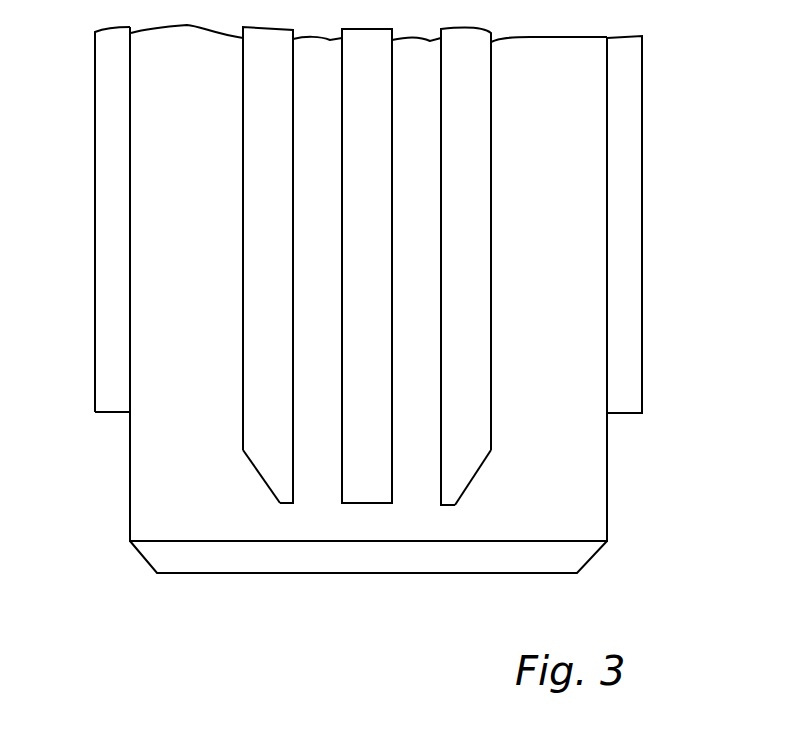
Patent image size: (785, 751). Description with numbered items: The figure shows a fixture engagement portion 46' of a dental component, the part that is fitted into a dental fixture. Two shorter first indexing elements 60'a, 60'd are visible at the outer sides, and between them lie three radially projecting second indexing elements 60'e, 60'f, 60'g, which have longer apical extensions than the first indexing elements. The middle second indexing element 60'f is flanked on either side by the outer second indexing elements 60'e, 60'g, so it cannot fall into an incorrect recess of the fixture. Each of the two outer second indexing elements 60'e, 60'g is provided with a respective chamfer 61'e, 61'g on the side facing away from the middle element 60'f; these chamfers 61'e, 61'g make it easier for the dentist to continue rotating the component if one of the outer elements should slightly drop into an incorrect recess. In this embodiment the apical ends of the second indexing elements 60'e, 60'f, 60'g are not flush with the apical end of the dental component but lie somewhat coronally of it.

The fixture engagement portion 46' is at (444, 299).
The first indexing element 60'a is at (76, 219).
The first indexing element 60'd is at (662, 224).
The outer second indexing element 60'e is at (254, 266).
The middle second indexing element 60'f is at (206, 266).
The outer second indexing element 60'g is at (163, 265).
The chamfer 61'e is at (562, 490).
The chamfer 61'g is at (167, 489).